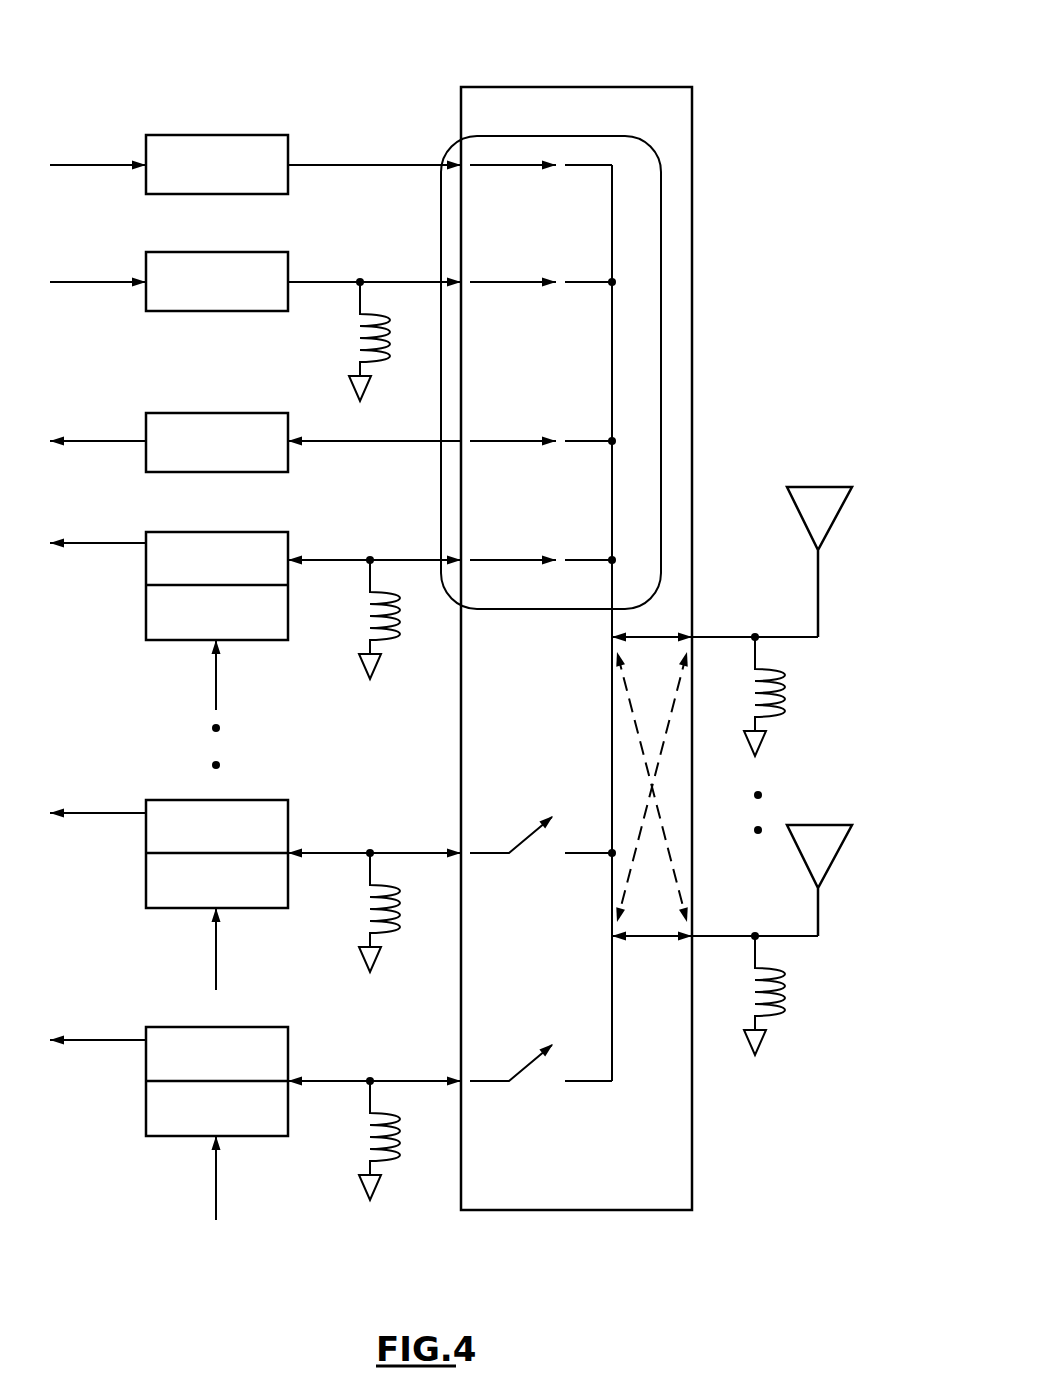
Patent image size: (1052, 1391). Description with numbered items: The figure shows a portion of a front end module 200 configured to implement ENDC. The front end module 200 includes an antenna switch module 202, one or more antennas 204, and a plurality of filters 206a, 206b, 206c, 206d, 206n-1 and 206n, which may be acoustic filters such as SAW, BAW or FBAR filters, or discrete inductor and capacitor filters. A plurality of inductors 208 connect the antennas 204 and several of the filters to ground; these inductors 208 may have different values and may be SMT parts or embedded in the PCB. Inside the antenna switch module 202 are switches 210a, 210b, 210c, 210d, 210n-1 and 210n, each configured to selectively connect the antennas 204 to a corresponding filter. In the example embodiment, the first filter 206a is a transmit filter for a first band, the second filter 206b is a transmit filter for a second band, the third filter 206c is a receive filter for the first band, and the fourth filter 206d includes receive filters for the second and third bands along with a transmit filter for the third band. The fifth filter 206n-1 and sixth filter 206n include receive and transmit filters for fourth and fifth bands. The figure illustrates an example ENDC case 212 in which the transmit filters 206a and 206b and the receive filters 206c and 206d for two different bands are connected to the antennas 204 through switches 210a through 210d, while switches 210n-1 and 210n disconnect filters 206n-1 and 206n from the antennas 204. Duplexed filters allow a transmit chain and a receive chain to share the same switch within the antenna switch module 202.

The front end module 200 is at (148, 40).
The antenna switch module 202 is at (583, 87).
The antenna 204 is at (833, 487).
The first filter 206a is at (172, 135).
The second filter 206b is at (172, 252).
The third filter 206c is at (172, 413).
The fourth filter 206d is at (172, 532).
The fifth filter 206n-1 is at (172, 800).
The sixth filter 206n is at (166, 1027).
The inductor 208 is at (362, 345).
The switch 210a is at (512, 165).
The switch 210b is at (512, 282).
The switch 210c is at (512, 441).
The switch 210d is at (512, 560).
The switch 210n-1 is at (523, 838).
The switch 210n is at (523, 1068).
The ENDC case 212 is at (662, 173).